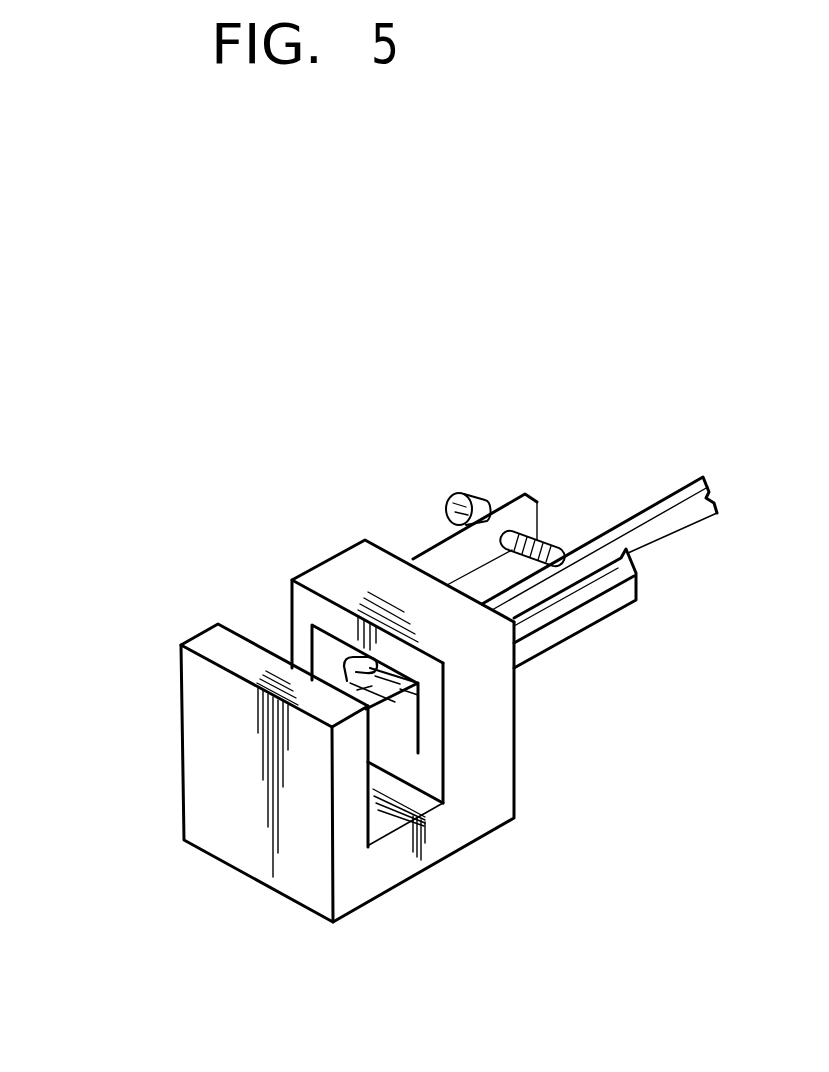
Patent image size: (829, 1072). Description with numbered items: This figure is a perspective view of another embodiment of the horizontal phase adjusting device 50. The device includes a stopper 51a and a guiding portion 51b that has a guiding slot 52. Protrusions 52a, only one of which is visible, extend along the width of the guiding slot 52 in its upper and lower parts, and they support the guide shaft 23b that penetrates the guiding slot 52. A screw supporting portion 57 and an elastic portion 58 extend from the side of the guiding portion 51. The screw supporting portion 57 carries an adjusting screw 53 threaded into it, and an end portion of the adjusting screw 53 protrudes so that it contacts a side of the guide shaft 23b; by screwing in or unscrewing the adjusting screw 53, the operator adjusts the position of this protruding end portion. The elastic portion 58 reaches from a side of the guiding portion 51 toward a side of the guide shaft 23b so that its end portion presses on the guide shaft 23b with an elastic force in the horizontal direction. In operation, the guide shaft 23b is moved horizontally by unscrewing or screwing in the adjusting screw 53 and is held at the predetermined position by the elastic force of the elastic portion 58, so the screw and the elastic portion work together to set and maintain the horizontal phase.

The horizontal phase adjusting device 50 is at (637, 360).
The guiding portion 51 is at (468, 822).
The stopper 51a is at (213, 787).
The guiding portion 51b is at (487, 707).
The guiding slot 52 is at (320, 656).
The protrusions 52a is at (420, 753).
The adjusting screw 53 is at (466, 489).
The screw supporting portion 57 is at (433, 550).
The elastic portion 58 is at (573, 638).
The guide shaft 23b is at (660, 520).